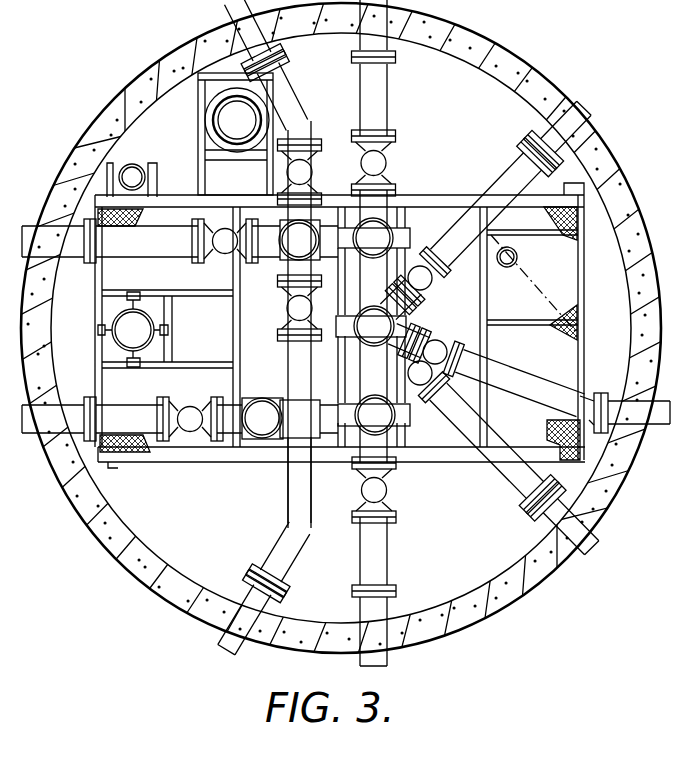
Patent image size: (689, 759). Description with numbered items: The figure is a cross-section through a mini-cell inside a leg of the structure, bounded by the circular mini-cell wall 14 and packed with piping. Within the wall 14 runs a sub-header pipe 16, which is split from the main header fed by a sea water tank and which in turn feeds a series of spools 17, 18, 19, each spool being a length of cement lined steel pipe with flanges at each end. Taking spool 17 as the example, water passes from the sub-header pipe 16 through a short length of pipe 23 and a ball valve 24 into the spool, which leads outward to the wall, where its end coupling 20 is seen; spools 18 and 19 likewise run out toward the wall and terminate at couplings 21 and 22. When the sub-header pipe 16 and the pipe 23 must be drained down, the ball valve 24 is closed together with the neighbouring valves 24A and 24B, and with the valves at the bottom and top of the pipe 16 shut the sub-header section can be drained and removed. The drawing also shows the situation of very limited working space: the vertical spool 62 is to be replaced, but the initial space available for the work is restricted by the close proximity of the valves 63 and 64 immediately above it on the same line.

The mini-cell wall 14 is at (100, 124).
The sub-header pipe 16 is at (373, 319).
The spool 17 is at (552, 398).
The spool 18 is at (503, 183).
The spool 19 is at (512, 472).
The outlet coupling 20 is at (657, 422).
The pipe coupling 21 is at (543, 135).
The pipe coupling 22 is at (562, 510).
The short length of pipe 23 is at (410, 320).
The ball valve 24 is at (444, 352).
The valve 24A is at (422, 270).
The valve 24B is at (430, 402).
The spool 62 is at (292, 492).
The valve 63 is at (303, 172).
The valve 64 is at (296, 311).